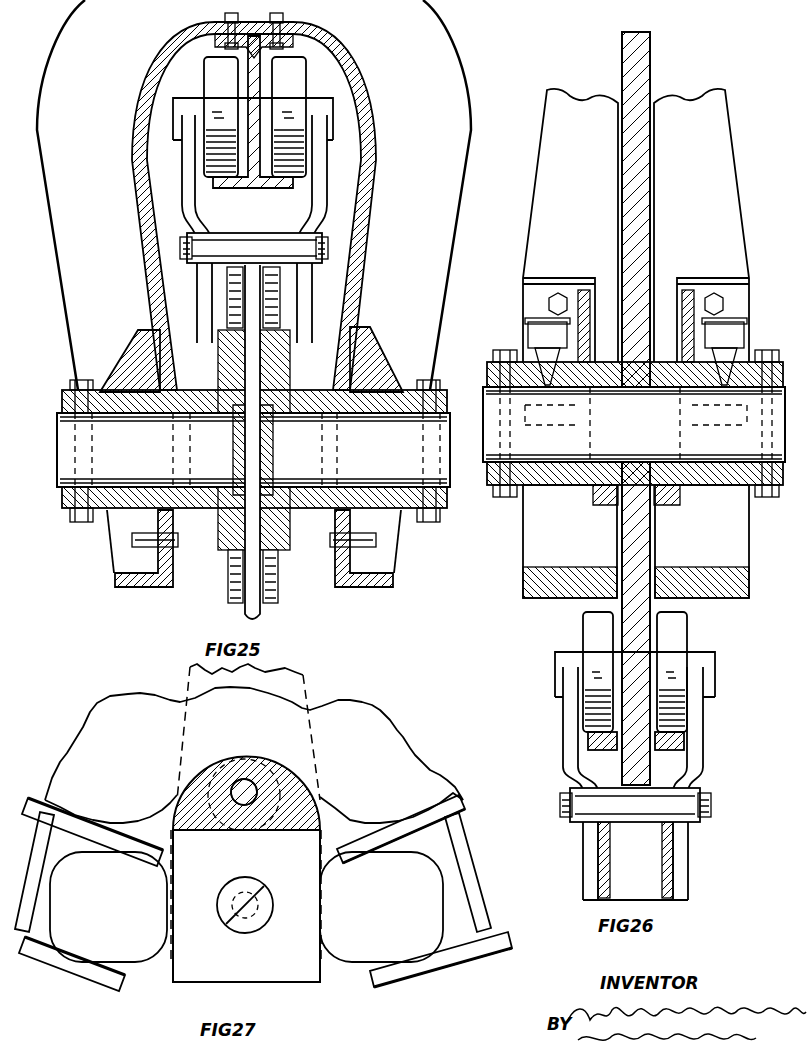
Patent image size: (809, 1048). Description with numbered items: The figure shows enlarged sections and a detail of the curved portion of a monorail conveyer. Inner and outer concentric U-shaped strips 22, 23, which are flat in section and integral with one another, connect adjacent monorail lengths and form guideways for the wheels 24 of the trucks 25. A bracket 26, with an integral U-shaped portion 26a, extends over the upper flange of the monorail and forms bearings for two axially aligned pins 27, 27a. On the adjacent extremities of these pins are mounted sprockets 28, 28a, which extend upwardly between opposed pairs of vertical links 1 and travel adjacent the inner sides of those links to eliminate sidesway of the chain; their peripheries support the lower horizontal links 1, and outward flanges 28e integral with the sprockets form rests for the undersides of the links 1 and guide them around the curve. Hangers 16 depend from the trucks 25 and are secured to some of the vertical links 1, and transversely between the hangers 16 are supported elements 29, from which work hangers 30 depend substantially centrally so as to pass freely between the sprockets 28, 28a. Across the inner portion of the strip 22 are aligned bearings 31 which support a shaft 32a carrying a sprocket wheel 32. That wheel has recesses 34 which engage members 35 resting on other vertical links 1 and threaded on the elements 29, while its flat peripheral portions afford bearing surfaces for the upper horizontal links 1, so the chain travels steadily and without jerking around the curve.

In FIG. 25, the links 1 is at (255, 294).
In FIG. 26, the links 1 is at (610, 852).
In FIG. 27, the links 1 is at (90, 832).
In FIG. 25, the hangers 16 is at (197, 293).
In FIG. 26, the hangers 16 is at (688, 853).
In FIG. 27, the hangers 16 is at (300, 690).
In FIG. 26, the inner U-shaped strip 22 is at (727, 612).
In FIG. 26, the outer U-shaped strip 23 is at (636, 754).
In FIG. 26, the wheels 24 is at (583, 628).
In FIG. 26, the trucks 25 is at (703, 720).
In FIG. 25, the bracket 26 is at (333, 352).
In FIG. 25, the U-shaped portion 26a is at (254, 195).
In FIG. 25, the pin 27 is at (220, 466).
In FIG. 25, the pin 27a is at (440, 466).
In FIG. 25, the sprocket 28 is at (185, 510).
In FIG. 25, the sprocket 28a is at (288, 555).
In FIG. 25, the outward flanges 28e is at (226, 556).
In FIG. 25, the elements 29 is at (254, 248).
In FIG. 26, the elements 29 is at (635, 805).
In FIG. 27, the elements 29 is at (247, 807).
In FIG. 25, the work hangers 30 is at (262, 613).
In FIG. 26, the bearings 31 is at (573, 483).
In FIG. 26, the sprocket wheel 32 is at (650, 66).
In FIG. 27, the sprocket wheel 32 is at (254, 755).
In FIG. 26, the shaft 32a is at (634, 424).
In FIG. 27, the recesses 34 is at (297, 771).
In FIG. 27, the members 35 is at (277, 827).